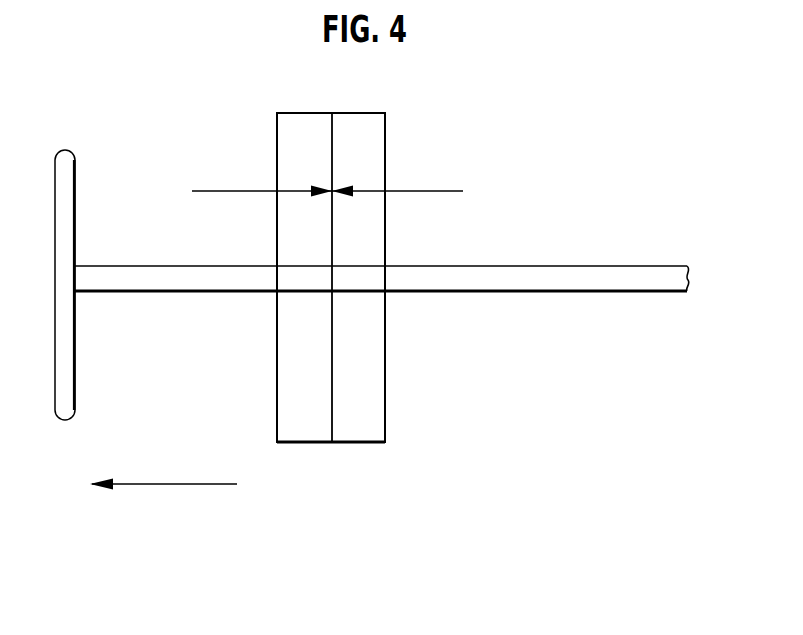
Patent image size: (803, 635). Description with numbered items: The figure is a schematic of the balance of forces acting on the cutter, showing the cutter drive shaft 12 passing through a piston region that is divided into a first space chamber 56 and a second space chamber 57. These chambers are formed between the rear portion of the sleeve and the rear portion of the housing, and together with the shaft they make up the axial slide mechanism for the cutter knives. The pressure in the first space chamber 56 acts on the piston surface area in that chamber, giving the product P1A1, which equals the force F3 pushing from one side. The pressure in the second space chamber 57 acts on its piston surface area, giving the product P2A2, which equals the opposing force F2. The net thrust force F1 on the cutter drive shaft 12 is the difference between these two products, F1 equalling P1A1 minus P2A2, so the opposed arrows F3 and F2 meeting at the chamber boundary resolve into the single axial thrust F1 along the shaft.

The cutter drive shaft 12 is at (175, 280).
The first space chamber 56 is at (310, 137).
The second space chamber 57 is at (360, 132).
The thrust force F1 is at (180, 484).
The force F2 is at (416, 191).
The force F3 is at (244, 191).
The product of first chamber pressure and piston area P1A1 is at (307, 428).
The product of second chamber pressure and piston area P2A2 is at (363, 428).